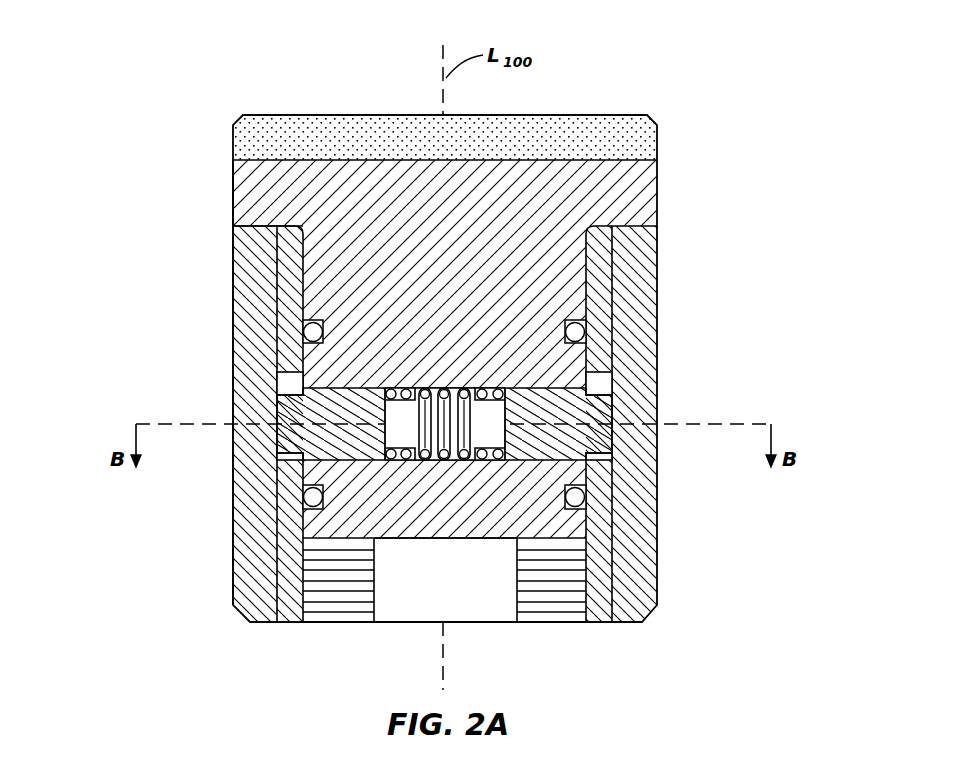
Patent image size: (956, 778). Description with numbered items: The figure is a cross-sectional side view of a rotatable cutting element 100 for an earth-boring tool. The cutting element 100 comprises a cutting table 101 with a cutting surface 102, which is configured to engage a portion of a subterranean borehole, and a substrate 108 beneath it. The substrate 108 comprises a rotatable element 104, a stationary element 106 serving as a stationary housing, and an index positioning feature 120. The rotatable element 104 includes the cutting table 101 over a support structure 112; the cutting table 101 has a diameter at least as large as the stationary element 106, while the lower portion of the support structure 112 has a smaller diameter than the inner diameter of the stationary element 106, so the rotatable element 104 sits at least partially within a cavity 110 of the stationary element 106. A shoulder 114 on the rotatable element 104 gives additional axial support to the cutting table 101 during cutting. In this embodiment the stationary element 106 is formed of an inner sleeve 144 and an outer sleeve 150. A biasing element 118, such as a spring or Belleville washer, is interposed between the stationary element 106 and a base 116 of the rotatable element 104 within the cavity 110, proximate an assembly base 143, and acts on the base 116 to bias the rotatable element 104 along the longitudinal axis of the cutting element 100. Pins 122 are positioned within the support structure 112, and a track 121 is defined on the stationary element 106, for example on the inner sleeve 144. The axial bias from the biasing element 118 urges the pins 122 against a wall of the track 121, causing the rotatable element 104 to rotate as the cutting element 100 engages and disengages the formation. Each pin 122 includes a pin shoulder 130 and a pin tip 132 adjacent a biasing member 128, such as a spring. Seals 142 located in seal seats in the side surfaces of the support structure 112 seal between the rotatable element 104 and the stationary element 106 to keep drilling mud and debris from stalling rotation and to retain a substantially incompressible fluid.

The cutting element 100 is at (176, 62).
The cutting table 101 is at (233, 135).
The cutting surface 102 is at (328, 114).
The rotatable element 104 is at (657, 185).
The stationary element 106 is at (444, 407).
The substrate 108 is at (160, 218).
The cavity 110 is at (233, 420).
The support structure 112 is at (233, 190).
The shoulder 114 is at (233, 227).
The base 116 is at (568, 532).
The biasing element 118 is at (575, 595).
The index positioning feature 120 is at (600, 391).
The track 121 is at (617, 378).
The pin 122 is at (617, 440).
The biasing member 128 is at (503, 390).
The pin shoulder 130 is at (523, 438).
The pin tip 132 is at (478, 390).
The seal 142 is at (303, 332).
The assembly base 143 is at (330, 622).
The inner sleeve 144 is at (602, 252).
The outer sleeve 150 is at (637, 283).